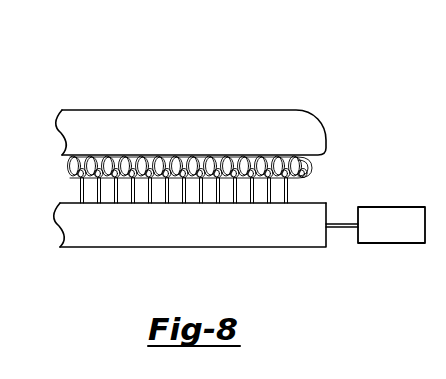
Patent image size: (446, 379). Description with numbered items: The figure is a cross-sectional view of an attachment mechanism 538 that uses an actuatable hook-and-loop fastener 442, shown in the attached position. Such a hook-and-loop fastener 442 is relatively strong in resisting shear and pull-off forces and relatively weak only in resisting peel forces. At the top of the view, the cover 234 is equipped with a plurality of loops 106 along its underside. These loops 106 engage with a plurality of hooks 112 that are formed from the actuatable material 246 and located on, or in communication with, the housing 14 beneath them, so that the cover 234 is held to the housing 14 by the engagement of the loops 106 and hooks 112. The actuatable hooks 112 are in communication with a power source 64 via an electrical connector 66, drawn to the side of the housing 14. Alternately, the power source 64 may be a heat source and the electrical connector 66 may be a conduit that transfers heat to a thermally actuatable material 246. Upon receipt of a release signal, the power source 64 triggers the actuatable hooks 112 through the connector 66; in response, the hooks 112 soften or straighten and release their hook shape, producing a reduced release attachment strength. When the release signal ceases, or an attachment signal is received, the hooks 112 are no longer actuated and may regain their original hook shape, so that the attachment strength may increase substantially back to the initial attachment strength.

The attachment mechanism 538 is at (108, 70).
The cover 234 is at (235, 110).
The loops 106 is at (63, 163).
The actuatable hooks 112 is at (80, 181).
The actuatable hook-and-loop fastener 442 is at (326, 172).
The actuatable material 246 is at (82, 198).
The housing 14 is at (115, 249).
The electrical connector 66 is at (340, 229).
The power source 64 is at (398, 234).